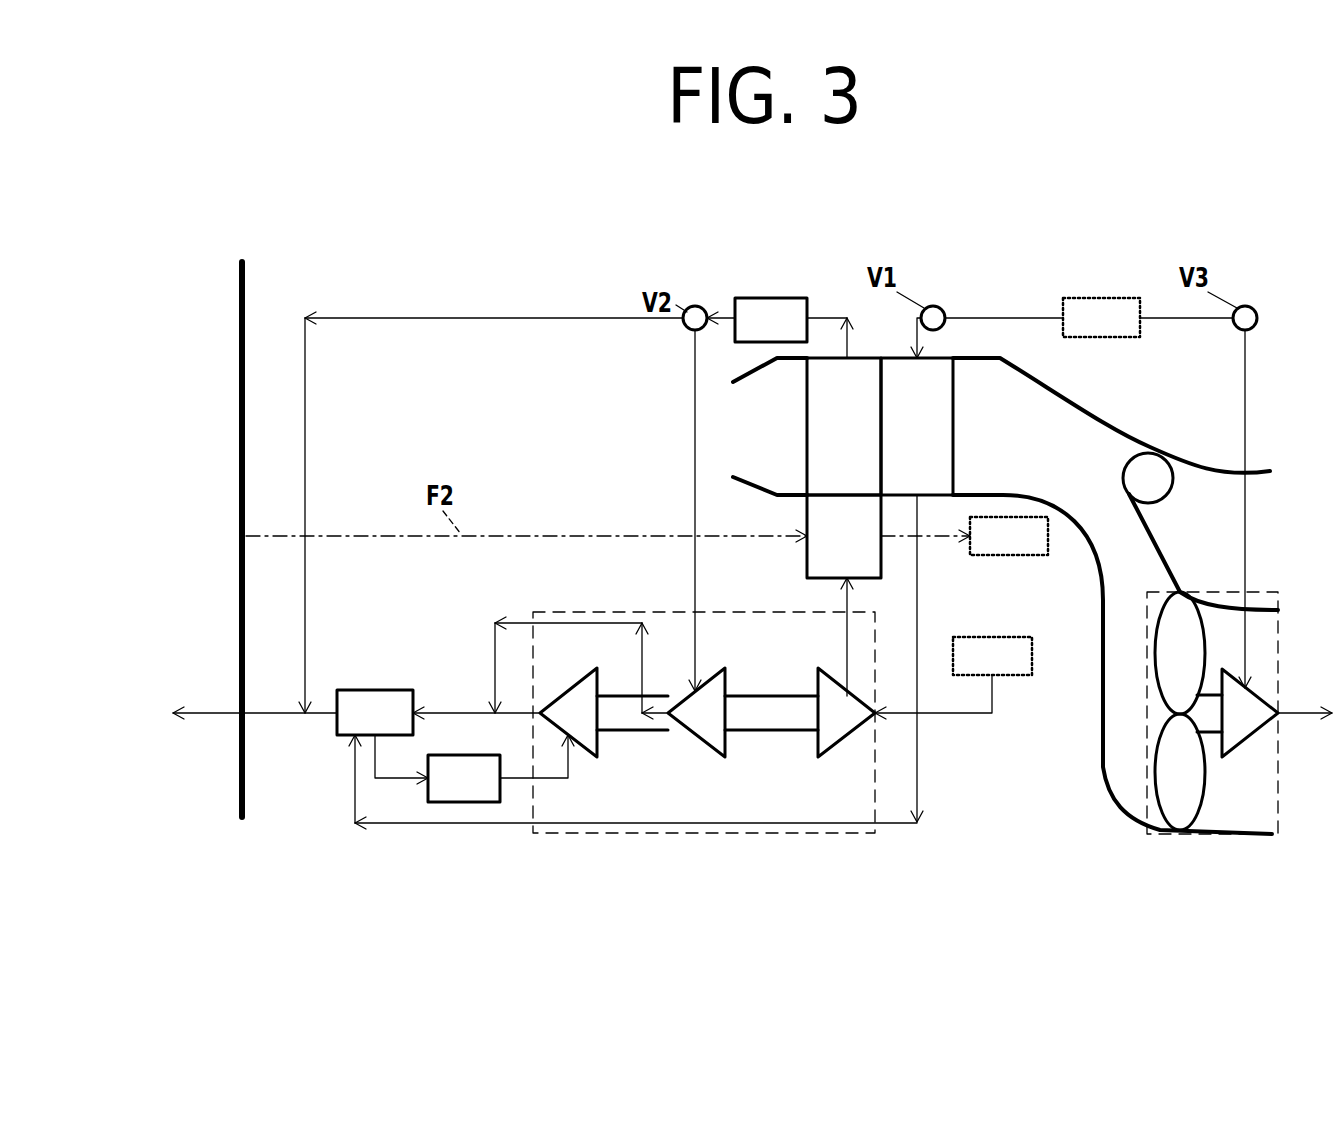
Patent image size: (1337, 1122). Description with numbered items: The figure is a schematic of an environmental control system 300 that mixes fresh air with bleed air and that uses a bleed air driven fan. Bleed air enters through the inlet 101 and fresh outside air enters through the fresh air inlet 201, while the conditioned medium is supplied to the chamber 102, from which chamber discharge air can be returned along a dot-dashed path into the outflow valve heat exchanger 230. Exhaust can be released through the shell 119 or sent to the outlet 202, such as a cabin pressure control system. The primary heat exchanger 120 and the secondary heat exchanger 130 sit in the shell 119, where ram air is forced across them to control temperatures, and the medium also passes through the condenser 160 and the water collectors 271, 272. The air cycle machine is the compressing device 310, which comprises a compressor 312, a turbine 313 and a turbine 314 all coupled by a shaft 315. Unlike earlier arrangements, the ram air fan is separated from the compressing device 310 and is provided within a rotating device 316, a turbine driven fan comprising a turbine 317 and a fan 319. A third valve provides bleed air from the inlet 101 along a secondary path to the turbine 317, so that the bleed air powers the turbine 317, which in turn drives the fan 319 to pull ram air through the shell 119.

The environmental control system 300 is at (1214, 169).
The chamber 102 is at (238, 262).
The water collector 271 is at (751, 334).
The secondary heat exchanger 130 is at (824, 441).
The primary heat exchanger 120 is at (897, 441).
The outflow valve heat exchanger 230 is at (824, 550).
The inlet 101 is at (1101, 317).
The outlet 202 is at (1009, 536).
The inlet 201 is at (992, 656).
The shell 119 is at (1148, 446).
The rotating device 316 is at (1147, 836).
The fan 319 is at (1190, 610).
The turbine 317 is at (1225, 727).
The condenser 160 is at (355, 727).
The water collector 272 is at (444, 792).
The compressing device 310 is at (757, 838).
The shaft 315 is at (752, 693).
The turbine 313 is at (555, 727).
The turbine 314 is at (679, 727).
The compressor 312 is at (823, 727).